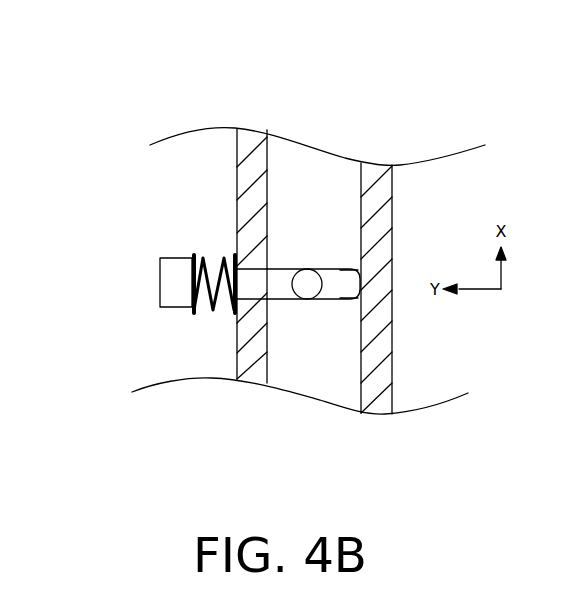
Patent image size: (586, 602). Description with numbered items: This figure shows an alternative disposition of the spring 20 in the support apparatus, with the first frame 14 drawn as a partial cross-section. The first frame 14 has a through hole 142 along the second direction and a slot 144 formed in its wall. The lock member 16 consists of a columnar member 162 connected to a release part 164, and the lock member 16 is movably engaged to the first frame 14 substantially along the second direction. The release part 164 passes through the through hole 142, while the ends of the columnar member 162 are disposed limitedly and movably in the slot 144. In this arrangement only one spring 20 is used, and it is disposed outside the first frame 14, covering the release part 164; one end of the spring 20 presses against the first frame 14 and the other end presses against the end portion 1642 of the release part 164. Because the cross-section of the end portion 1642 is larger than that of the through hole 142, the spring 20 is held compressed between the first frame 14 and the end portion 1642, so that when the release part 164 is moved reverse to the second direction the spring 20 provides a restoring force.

The first frame 14 is at (250, 140).
The through hole 142 is at (242, 258).
The slot 144 is at (343, 273).
The lock member 16 is at (290, 440).
The columnar member 162 is at (307, 286).
The release part 164 is at (220, 300).
The end portion 1642 is at (167, 273).
The spring 20 is at (207, 263).